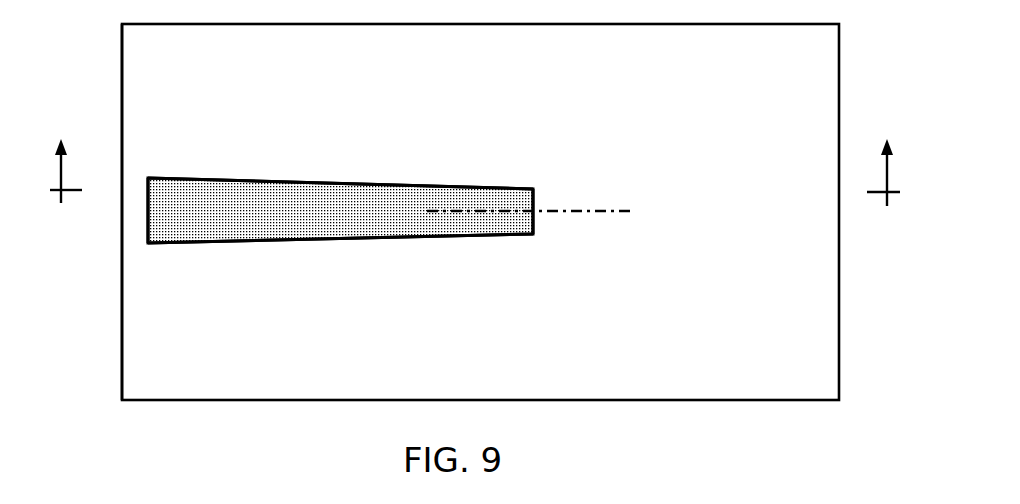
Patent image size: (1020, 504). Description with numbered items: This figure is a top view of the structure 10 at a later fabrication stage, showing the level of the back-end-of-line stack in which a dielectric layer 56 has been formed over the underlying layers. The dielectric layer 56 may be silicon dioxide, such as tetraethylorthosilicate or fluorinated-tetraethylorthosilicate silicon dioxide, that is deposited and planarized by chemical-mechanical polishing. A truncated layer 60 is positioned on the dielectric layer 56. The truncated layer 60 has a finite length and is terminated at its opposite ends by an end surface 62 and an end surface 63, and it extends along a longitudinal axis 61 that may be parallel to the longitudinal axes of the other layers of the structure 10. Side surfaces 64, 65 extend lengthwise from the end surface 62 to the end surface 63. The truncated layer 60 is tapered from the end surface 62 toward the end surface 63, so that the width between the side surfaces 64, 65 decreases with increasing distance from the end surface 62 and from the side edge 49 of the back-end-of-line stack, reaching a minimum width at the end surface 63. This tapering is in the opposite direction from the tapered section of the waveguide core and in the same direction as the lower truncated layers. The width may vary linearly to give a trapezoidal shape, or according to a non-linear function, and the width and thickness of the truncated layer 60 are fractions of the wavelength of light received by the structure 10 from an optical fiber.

The structure 10 is at (474, 154).
The side edge 49 is at (122, 278).
The dielectric layer 56 is at (728, 317).
The truncated layer 60 is at (323, 203).
The longitudinal axis 61 is at (518, 210).
The end surface 62 is at (148, 227).
The end surface 63 is at (533, 197).
The side surface 64 is at (412, 187).
The side surface 65 is at (418, 234).